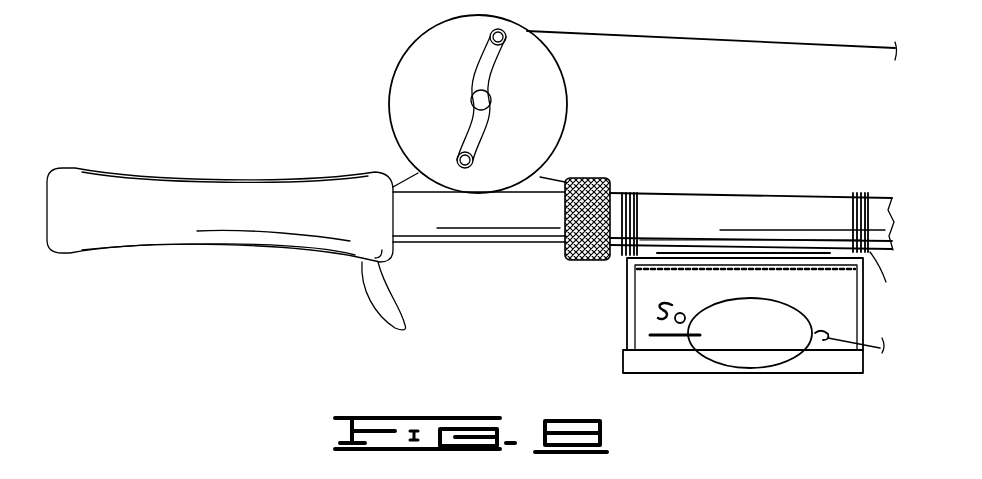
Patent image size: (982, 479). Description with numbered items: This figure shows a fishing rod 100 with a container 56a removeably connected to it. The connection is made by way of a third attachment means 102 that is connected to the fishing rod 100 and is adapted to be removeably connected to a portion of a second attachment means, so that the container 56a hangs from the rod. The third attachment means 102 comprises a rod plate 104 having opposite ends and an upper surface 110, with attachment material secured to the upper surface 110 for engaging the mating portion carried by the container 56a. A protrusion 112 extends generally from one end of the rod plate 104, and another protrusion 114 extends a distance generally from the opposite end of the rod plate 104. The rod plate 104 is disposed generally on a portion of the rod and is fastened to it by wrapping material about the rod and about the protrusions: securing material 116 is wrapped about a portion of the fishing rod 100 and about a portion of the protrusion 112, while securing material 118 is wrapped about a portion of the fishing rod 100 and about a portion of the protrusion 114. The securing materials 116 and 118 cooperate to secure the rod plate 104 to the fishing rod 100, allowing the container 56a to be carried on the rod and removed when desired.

The fishing rod 100 is at (349, 261).
The third attachment means 102 is at (752, 241).
The rod plate 104 is at (688, 247).
The upper surface 110 is at (652, 248).
The protrusion 112 is at (620, 255).
The protrusion 114 is at (890, 276).
The securing material 116 is at (627, 258).
The securing material 118 is at (866, 195).
The container 56a is at (717, 373).